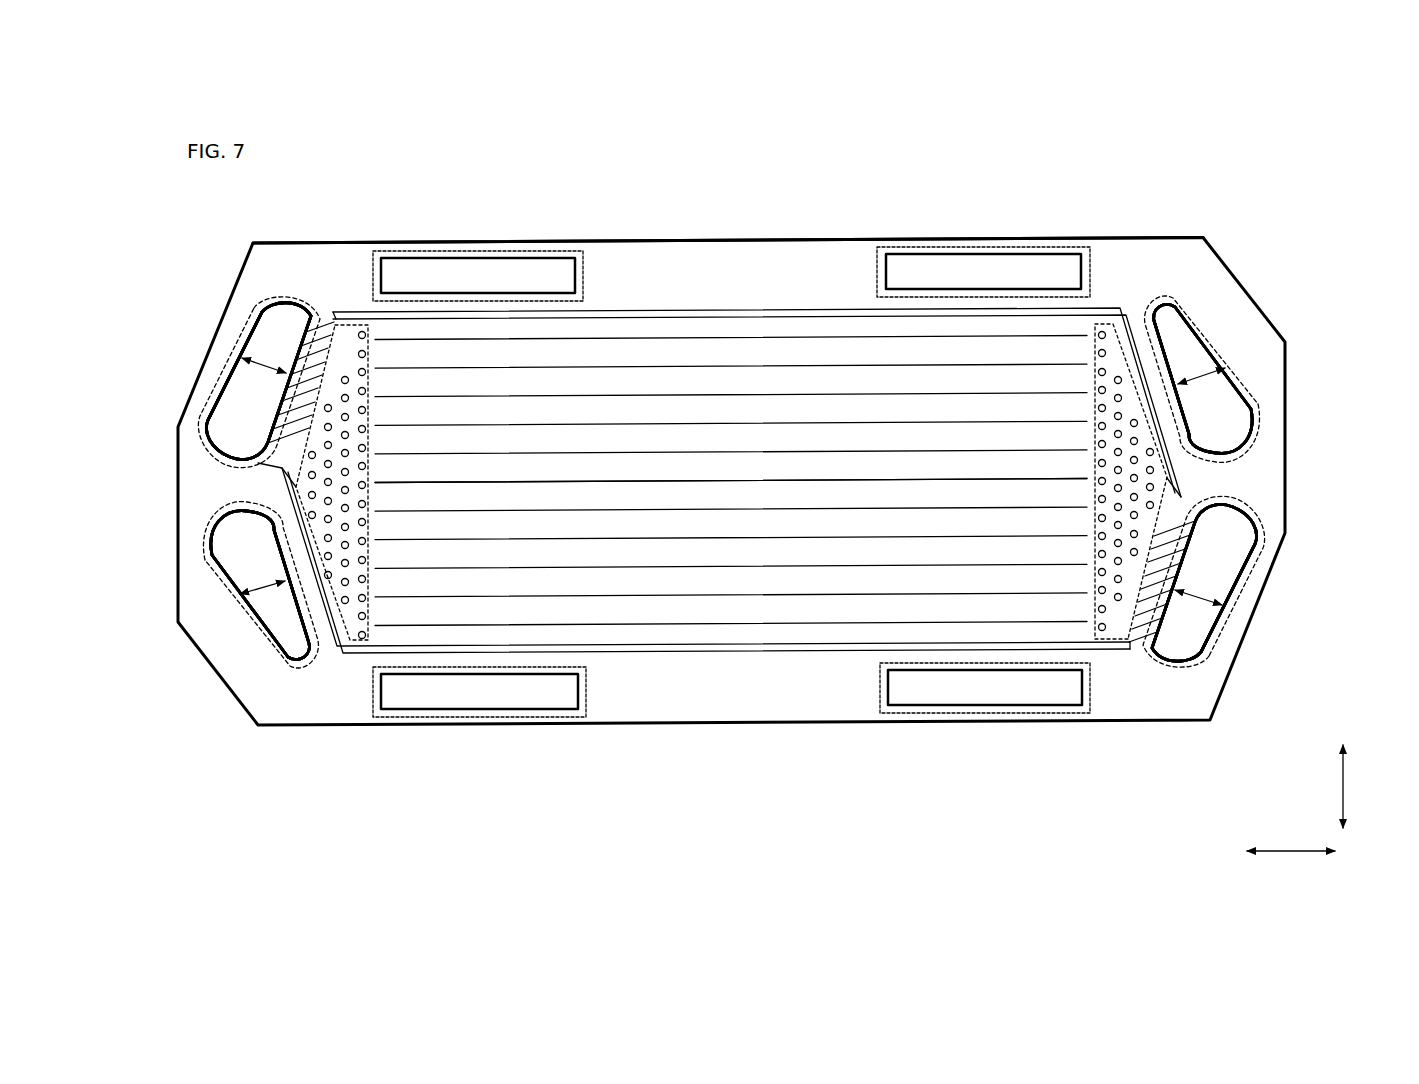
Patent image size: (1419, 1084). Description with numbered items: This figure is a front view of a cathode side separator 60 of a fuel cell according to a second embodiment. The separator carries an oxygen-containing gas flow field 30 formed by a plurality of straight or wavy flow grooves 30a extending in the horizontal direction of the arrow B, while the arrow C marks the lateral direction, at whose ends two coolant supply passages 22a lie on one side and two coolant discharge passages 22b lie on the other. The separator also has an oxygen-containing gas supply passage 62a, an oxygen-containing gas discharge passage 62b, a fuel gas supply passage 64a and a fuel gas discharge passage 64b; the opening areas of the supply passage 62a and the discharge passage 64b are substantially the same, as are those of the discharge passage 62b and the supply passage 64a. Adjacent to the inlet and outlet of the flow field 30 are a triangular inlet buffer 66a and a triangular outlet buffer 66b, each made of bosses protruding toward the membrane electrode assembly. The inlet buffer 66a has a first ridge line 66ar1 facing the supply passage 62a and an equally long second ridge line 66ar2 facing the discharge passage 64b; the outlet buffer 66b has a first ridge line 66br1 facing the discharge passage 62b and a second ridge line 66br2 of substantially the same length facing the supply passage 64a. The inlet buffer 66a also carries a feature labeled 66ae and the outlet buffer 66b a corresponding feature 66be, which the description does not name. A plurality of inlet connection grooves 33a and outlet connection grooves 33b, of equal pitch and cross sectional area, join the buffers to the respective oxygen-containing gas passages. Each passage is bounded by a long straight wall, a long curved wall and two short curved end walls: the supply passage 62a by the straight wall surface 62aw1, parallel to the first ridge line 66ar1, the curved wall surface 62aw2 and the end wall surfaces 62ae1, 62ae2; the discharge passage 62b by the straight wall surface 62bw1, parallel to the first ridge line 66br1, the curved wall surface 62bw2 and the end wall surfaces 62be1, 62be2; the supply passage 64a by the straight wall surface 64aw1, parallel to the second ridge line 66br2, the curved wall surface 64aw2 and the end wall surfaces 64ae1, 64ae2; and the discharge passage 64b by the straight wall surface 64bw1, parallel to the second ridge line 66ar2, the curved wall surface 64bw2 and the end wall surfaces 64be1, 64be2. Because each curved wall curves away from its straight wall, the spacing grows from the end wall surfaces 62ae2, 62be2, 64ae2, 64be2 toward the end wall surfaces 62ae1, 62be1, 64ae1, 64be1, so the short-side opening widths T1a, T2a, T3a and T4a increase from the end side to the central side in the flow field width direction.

The cathode side separator 60 is at (399, 172).
The oxygen-containing gas supply passage 62a is at (267, 310).
The oxygen-containing gas discharge passage 62b is at (1200, 655).
The fuel gas supply passage 64a is at (1188, 330).
The fuel gas discharge passage 64b is at (272, 632).
The end wall surface 62ae1 is at (225, 422).
The end wall surface 62ae2 is at (288, 303).
The straight wall surface 62aw1 is at (262, 333).
The curved wall surface 62aw2 is at (242, 375).
The end wall surface 62be1 is at (1262, 542).
The end wall surface 62be2 is at (1178, 662).
The straight wall surface 62bw1 is at (1182, 640).
The curved wall surface 62bw2 is at (1225, 590).
The end wall surface 64ae1 is at (1247, 425).
The end wall surface 64ae2 is at (1175, 302).
The straight wall surface 64aw1 is at (1160, 330).
The curved wall surface 64aw2 is at (1252, 412).
The end wall surface 64be1 is at (245, 517).
The end wall surface 64be2 is at (287, 665).
The straight wall surface 64bw1 is at (292, 657).
The curved wall surface 64bw2 is at (212, 548).
The inlet buffer 66a is at (350, 605).
The outlet buffer 66b is at (1108, 380).
The edge of inlet buffer 66ae is at (282, 480).
The edge of outlet buffer 66be is at (1185, 490).
The first ridge line 66ar1 is at (334, 316).
The second ridge line 66ar2 is at (300, 602).
The first ridge line 66br1 is at (1128, 656).
The second ridge line 66br2 is at (1120, 357).
The inlet connection grooves 33a is at (283, 443).
The outlet connection grooves 33b is at (1245, 548).
The oxygen-containing gas flow field 30 is at (656, 582).
The flow grooves 30a is at (832, 550).
The coolant supply passages 22a is at (466, 272).
The coolant discharge passages 22b is at (930, 268).
The width of opening on short side T1a is at (267, 357).
The width of opening on short side T2a is at (1198, 588).
The width of opening on short side T3a is at (1204, 386).
The width of opening on short side T4a is at (260, 579).
The horizontal direction arrow B is at (1291, 867).
The lateral direction arrow C is at (1354, 786).